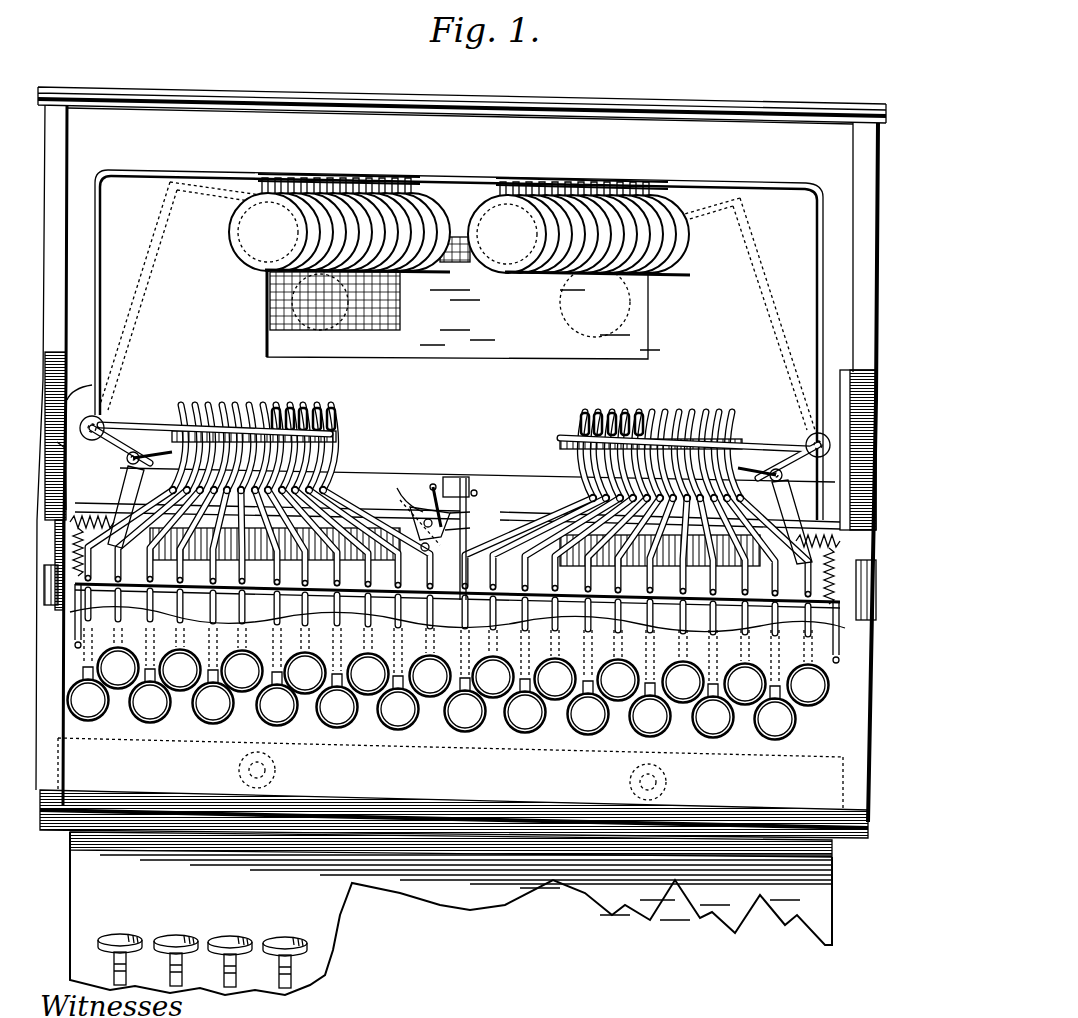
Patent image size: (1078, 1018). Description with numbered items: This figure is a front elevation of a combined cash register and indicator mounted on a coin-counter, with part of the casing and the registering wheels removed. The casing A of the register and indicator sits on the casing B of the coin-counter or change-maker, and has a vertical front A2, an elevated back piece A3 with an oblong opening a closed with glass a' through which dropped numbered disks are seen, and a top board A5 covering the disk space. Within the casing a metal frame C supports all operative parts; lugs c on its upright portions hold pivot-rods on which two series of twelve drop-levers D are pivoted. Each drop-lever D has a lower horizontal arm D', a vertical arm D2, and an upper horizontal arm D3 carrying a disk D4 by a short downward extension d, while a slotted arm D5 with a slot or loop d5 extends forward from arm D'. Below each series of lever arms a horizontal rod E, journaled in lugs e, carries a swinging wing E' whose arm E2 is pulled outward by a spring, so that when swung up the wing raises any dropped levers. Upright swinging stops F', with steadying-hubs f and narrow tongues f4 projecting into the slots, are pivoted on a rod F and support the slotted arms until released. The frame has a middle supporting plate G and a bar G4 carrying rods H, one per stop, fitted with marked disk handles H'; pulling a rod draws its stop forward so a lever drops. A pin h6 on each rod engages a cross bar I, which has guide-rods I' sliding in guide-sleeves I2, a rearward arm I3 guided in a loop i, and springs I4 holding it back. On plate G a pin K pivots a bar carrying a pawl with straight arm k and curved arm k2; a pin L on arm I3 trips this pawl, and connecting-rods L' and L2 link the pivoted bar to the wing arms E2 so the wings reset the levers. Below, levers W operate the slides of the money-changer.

The casing of the register and indicator A is at (863, 158).
The vertical front A2 is at (454, 788).
The elevated vertical back piece A3 is at (723, 337).
The top board A5 is at (818, 112).
The casing of the coin-counter or change-maker B is at (451, 913).
The levers for operating the slides of the money-changer W is at (280, 940).
The metal frame C is at (98, 392).
The lugs c is at (100, 418).
The drop-levers D is at (457, 306).
The horizontal arm D' is at (455, 437).
The vertical arm D2 is at (140, 238).
The upper horizontal arm D3 is at (222, 166).
The disk D4 is at (250, 250).
The slotted arms D5 is at (250, 410).
The downward extension d is at (262, 185).
The slot or loop d5 is at (578, 432).
The oblong opening a is at (455, 298).
The glass a' is at (583, 302).
The horizontal bar or rod E is at (456, 506).
The plate forming a swinging wing E' is at (359, 456).
The arm E2 is at (128, 517).
The lugs e is at (427, 508).
The steadying-hubs f is at (448, 542).
The narrow tongue f4 is at (208, 408).
The rod F is at (558, 573).
The upright swinging stops F' is at (381, 451).
The middle supporting-plate portion G is at (457, 517).
The bar G4 is at (288, 582).
The pin h6 is at (213, 580).
The rods H is at (457, 627).
The disks or flat handles H' is at (448, 684).
The bar I is at (457, 600).
The guide-rods I' is at (457, 619).
The guide-sleeves I2 is at (76, 640).
The arm I3 is at (459, 539).
The springs I4 is at (70, 566).
The pin K is at (433, 500).
The straight arm k is at (436, 553).
The curved arm k2 is at (431, 522).
The pin L is at (470, 510).
The connecting-rod L' is at (407, 495).
The connecting-rod L2 is at (471, 527).
The loop i is at (468, 492).